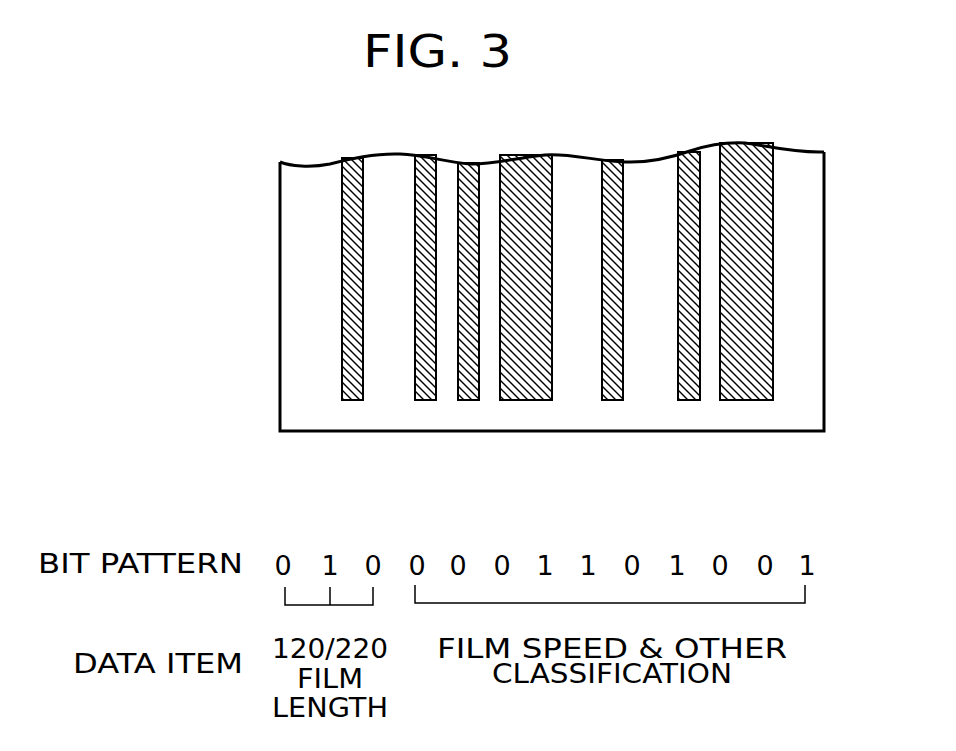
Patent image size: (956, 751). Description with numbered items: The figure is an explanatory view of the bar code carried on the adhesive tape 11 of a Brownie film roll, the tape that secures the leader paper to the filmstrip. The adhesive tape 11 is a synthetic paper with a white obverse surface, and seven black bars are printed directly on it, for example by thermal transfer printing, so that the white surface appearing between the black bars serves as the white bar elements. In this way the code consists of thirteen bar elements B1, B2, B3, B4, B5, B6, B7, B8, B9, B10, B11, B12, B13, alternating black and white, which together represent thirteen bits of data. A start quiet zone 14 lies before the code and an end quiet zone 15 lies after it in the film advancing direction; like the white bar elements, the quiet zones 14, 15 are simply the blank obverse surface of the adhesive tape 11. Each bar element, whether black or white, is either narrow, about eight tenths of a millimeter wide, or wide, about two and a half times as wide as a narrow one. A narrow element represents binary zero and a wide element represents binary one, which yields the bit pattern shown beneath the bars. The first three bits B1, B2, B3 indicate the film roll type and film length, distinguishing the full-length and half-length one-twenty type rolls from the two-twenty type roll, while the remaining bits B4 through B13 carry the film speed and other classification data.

The adhesive tape 11 is at (252, 227).
The start quiet zone 14 is at (292, 305).
The end quiet zone 15 is at (812, 313).
The bar element B1 is at (345, 400).
The bar element B2 is at (388, 393).
The bar element B3 is at (422, 400).
The bar element B4 is at (447, 393).
The bar element B5 is at (467, 400).
The bar element B6 is at (487, 393).
The bar element B7 is at (527, 400).
The bar element B8 is at (575, 393).
The bar element B9 is at (613, 400).
The bar element B10 is at (650, 393).
The bar element B11 is at (687, 400).
The bar element B12 is at (710, 393).
The bar element B13 is at (757, 400).